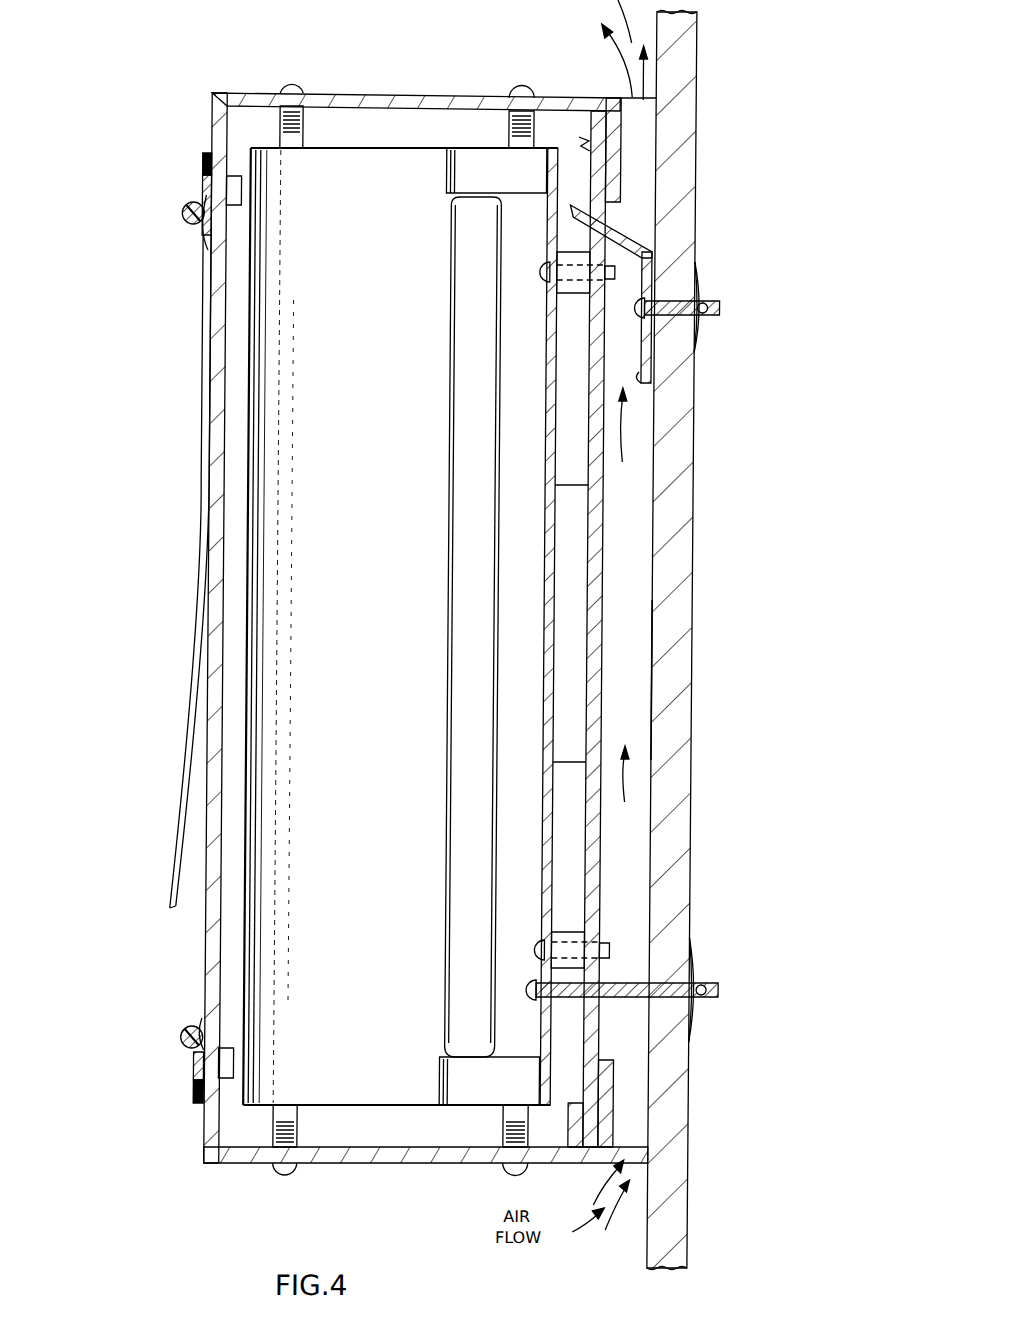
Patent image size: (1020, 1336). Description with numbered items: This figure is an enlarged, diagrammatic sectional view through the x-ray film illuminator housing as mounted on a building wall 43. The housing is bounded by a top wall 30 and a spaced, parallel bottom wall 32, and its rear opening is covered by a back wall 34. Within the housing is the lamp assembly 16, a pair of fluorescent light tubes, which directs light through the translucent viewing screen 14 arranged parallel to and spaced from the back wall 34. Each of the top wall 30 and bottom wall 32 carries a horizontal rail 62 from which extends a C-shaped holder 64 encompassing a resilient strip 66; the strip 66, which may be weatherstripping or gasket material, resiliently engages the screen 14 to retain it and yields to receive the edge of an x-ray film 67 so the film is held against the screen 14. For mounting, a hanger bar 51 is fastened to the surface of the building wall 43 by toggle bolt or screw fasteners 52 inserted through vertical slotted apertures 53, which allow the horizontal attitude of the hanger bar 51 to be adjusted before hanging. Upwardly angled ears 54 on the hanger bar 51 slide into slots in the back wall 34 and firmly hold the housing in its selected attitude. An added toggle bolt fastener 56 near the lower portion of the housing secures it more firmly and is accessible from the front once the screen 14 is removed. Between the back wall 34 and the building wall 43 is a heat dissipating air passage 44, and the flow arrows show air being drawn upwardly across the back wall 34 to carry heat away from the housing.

The translucent screen 14 is at (223, 783).
The lamp assembly 16 is at (468, 917).
The top wall 30 is at (471, 94).
The bottom wall 32 is at (410, 1156).
The back wall 34 is at (611, 497).
The building wall 43 is at (686, 578).
The air passage 44 is at (661, 700).
The hanger bar 51 is at (640, 360).
The fasteners 52 is at (727, 322).
The vertical slotted apertures 53 is at (708, 298).
The ears 54 is at (604, 250).
The toggle bolt fastener 56 is at (725, 1000).
The horizontal rail 62 is at (205, 165).
The C-shaped holder 64 is at (185, 212).
The resilient strip 66 is at (206, 240).
The x-ray film 67 is at (204, 681).